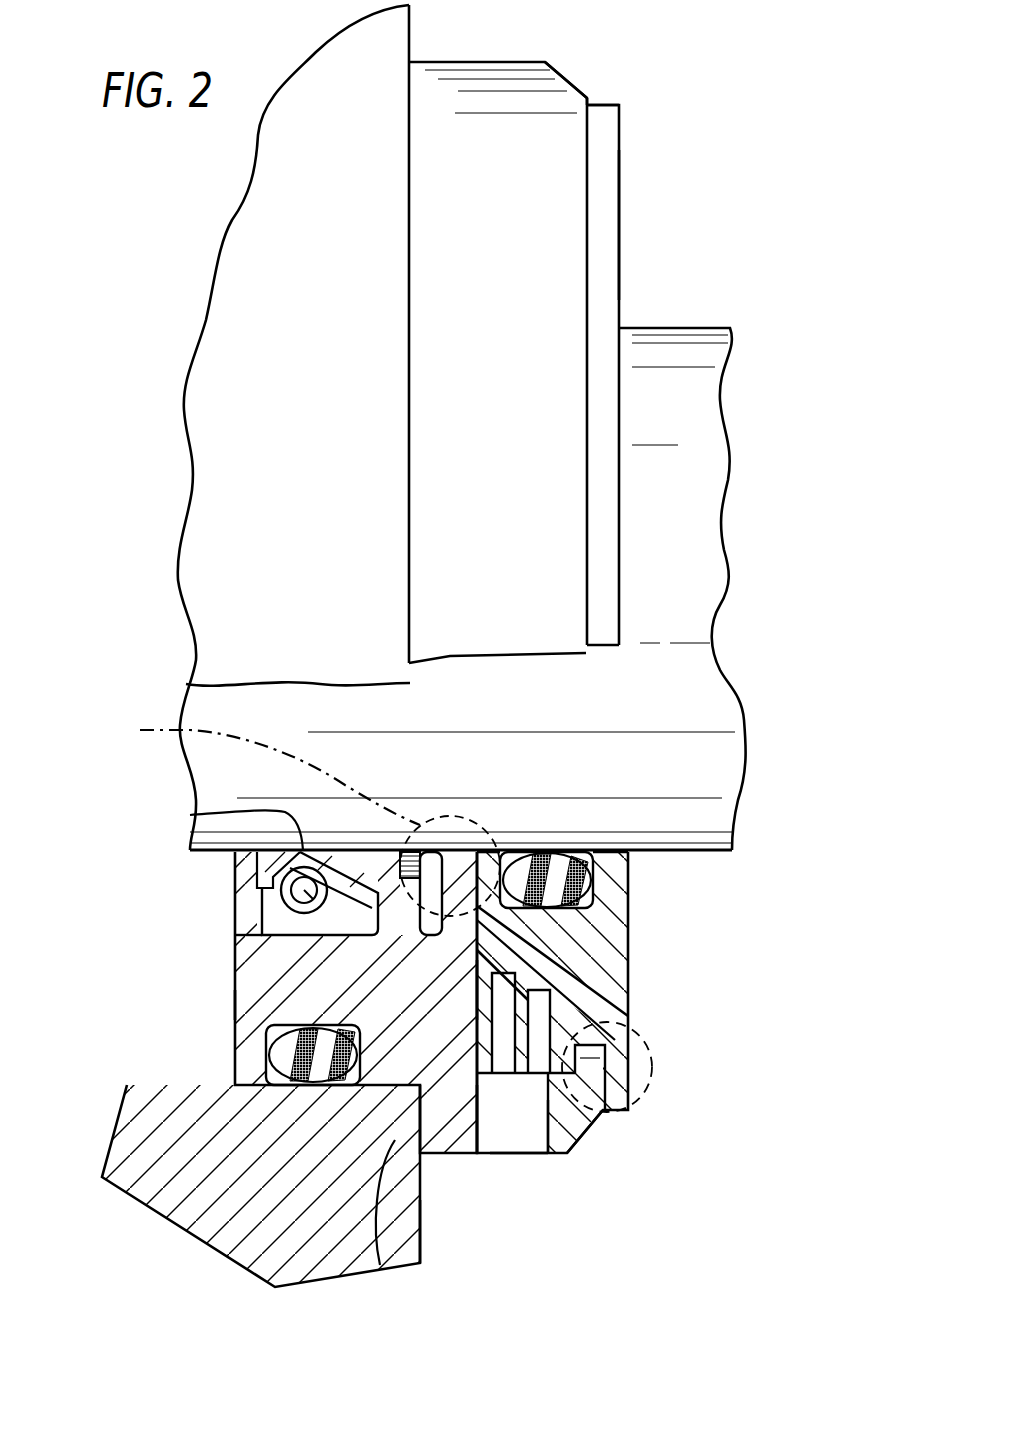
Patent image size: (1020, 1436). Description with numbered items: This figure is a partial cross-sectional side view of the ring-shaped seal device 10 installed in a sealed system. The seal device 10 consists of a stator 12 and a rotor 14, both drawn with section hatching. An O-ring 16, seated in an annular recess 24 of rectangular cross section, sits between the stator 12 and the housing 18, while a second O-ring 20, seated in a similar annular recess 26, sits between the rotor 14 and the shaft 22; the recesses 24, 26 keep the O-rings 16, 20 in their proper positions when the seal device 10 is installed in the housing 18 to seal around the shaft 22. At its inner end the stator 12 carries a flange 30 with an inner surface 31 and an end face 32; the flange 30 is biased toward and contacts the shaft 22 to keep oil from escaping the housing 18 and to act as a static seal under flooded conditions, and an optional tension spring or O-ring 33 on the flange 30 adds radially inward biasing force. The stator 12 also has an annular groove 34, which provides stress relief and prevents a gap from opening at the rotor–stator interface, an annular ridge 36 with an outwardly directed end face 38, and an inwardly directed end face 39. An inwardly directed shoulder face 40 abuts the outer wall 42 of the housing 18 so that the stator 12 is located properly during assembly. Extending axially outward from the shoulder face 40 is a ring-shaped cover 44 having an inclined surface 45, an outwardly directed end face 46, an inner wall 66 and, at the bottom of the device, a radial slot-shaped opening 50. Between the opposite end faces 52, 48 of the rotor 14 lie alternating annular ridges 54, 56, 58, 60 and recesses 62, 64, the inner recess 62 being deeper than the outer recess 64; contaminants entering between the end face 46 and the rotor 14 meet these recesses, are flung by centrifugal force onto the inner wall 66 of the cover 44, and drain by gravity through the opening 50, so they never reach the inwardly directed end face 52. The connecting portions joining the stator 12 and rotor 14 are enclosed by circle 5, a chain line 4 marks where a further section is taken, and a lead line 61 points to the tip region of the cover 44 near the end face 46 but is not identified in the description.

The section line 4 is at (306, 815).
The circle 5 is at (652, 1098).
The seal device 10 is at (730, 912).
The stator 12 is at (518, 62).
The rotor 14 is at (603, 248).
The O-ring 16 is at (275, 1062).
The housing 18 is at (325, 306).
The O-ring 20 is at (592, 875).
The shaft 22 is at (668, 333).
The annular recess 24 is at (264, 1040).
The annular recess 26 is at (608, 905).
The flange 30 is at (290, 892).
The inner surface 31 is at (195, 813).
The end face 32 is at (256, 873).
The tension spring or O-ring 33 is at (262, 920).
The annular groove 34 is at (410, 850).
The annular ridge 36 is at (440, 910).
The end face 38 is at (483, 1155).
The end face 39 is at (235, 1005).
The shoulder face 40 is at (372, 1262).
The outer wall 42 is at (430, 1232).
The cover 44 is at (535, 306).
The inclined surface 45 is at (566, 96).
The end face 46 is at (600, 100).
The end face 48 is at (620, 178).
The slot-shaped opening 50 is at (512, 1150).
The end face 52 is at (492, 848).
The annular ridge 54 is at (477, 990).
The annular ridge 56 is at (520, 955).
The annular ridge 58 is at (558, 1000).
The annular ridge 60 is at (628, 1060).
The tip 61 is at (605, 105).
The inner recess 62 is at (492, 1040).
The outer recess 64 is at (524, 1113).
The inner wall 66 is at (545, 1155).